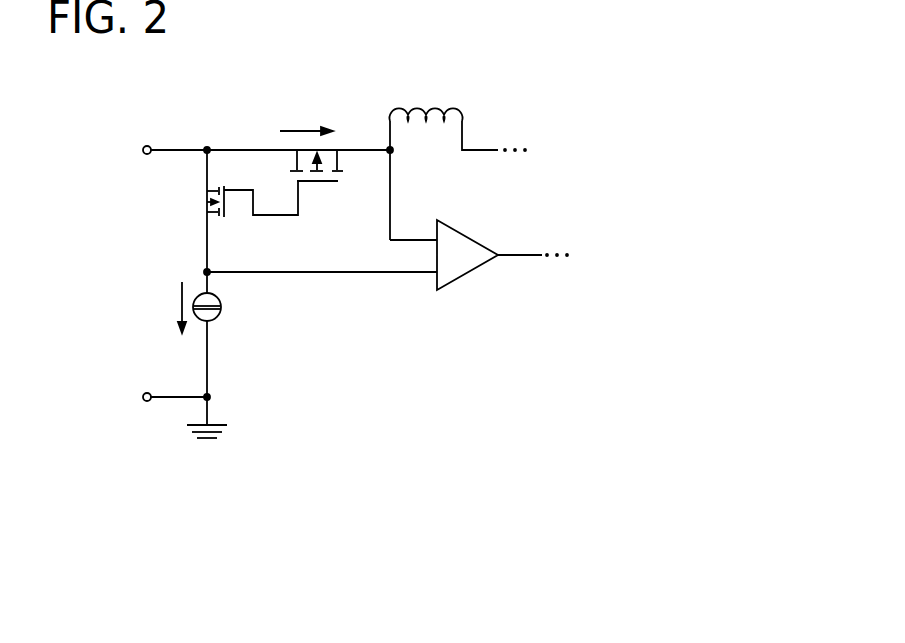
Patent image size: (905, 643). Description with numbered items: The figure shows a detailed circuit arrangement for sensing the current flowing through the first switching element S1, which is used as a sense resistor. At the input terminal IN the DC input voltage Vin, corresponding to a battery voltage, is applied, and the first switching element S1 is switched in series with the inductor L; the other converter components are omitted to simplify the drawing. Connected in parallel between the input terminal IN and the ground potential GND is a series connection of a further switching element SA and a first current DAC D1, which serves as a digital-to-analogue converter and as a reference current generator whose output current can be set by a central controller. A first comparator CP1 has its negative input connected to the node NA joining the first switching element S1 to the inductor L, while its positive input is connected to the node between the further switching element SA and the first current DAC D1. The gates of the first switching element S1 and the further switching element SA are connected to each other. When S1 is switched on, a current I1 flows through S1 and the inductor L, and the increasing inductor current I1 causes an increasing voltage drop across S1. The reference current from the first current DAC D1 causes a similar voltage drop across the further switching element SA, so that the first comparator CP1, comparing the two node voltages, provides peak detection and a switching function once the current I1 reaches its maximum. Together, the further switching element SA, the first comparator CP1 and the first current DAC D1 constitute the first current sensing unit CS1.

The input terminal IN is at (131, 152).
The ground potential GND is at (165, 421).
The further switching element SA is at (217, 202).
The first switching element S1 is at (325, 185).
The current I1 is at (306, 117).
The node NA is at (388, 147).
The inductor L is at (440, 108).
The first comparator CP1 is at (468, 238).
The first current DAC D1 is at (222, 316).
The first current sensing unit CS1 is at (408, 350).